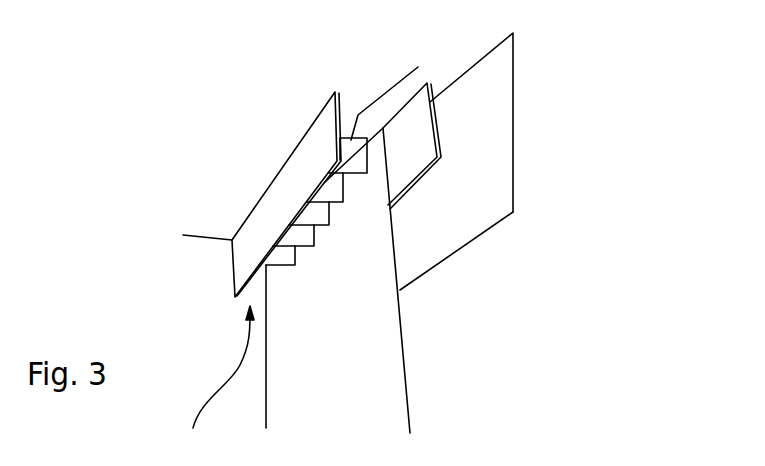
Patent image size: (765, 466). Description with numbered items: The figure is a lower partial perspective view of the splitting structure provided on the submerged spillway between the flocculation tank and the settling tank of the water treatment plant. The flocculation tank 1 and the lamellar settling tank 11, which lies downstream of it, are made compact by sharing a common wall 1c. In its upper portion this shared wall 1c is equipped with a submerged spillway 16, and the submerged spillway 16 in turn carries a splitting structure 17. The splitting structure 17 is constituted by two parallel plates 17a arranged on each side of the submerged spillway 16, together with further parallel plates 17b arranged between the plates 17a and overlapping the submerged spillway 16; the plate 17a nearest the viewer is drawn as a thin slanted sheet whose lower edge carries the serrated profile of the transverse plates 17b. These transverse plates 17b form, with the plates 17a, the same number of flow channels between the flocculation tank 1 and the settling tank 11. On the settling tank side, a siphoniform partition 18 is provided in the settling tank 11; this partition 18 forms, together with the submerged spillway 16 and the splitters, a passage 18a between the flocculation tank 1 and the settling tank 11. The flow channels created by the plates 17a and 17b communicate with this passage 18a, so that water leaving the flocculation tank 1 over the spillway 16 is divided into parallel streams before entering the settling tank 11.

The flocculation tank 1 is at (210, 349).
The shared wall 1c is at (358, 411).
The lamellar settling tank 11 is at (450, 353).
The submerged spillway 16 is at (214, 386).
The splitting structure 17 is at (345, 155).
The parallel plates 17a is at (287, 190).
The transverse plates 17b is at (418, 67).
The siphoniform partition 18 is at (500, 153).
The passage 18a is at (433, 205).